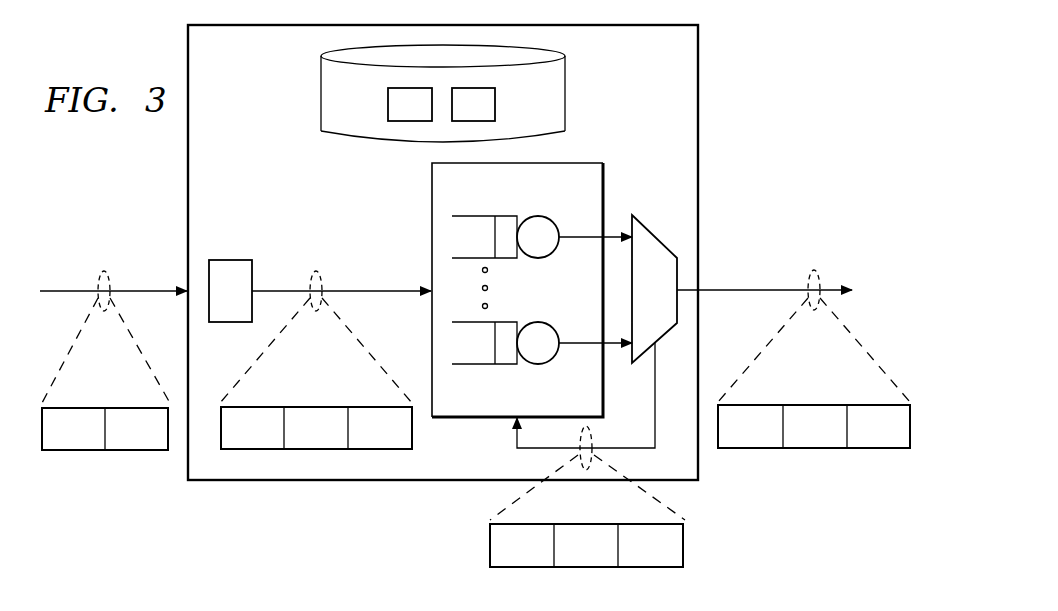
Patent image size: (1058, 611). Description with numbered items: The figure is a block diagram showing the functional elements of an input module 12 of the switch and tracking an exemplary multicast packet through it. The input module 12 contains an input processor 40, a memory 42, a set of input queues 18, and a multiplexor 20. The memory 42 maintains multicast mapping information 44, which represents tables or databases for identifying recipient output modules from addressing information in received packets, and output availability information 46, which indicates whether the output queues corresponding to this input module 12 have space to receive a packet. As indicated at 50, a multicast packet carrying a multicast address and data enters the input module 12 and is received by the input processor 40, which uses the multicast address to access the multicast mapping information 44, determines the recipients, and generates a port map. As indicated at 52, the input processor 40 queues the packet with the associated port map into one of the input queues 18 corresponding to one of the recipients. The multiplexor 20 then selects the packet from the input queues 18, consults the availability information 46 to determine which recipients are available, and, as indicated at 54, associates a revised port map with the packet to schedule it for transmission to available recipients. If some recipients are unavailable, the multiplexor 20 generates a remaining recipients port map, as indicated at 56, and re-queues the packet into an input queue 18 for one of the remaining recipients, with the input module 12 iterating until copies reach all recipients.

The input module 12 is at (698, 140).
The input queues 18 is at (553, 222).
The multiplexor 20 is at (655, 233).
The input processor 40 is at (230, 260).
The memory 42 is at (321, 93).
The multicast mapping information 44 is at (388, 105).
The output availability information 46 is at (495, 105).
The multicast packet entering input module 50 is at (92, 450).
The multicast packet queued with port map 52 is at (315, 407).
The multicast packet scheduled with revised port map 54 is at (813, 405).
The multicast packet re-queued with remaining recipients port map 56 is at (490, 545).